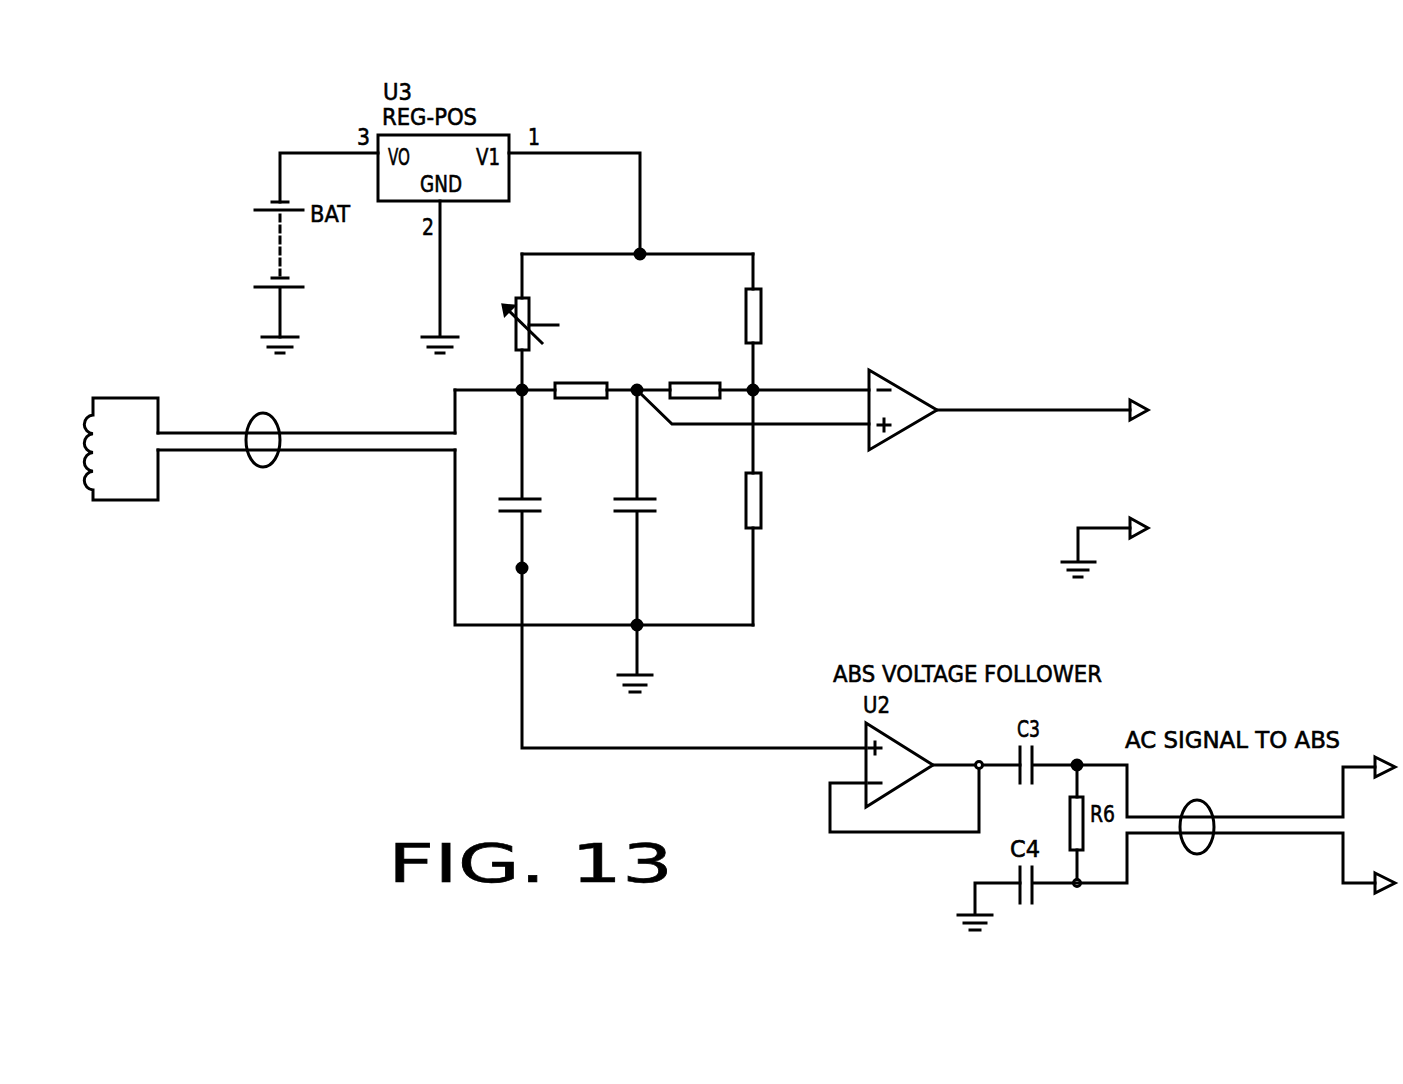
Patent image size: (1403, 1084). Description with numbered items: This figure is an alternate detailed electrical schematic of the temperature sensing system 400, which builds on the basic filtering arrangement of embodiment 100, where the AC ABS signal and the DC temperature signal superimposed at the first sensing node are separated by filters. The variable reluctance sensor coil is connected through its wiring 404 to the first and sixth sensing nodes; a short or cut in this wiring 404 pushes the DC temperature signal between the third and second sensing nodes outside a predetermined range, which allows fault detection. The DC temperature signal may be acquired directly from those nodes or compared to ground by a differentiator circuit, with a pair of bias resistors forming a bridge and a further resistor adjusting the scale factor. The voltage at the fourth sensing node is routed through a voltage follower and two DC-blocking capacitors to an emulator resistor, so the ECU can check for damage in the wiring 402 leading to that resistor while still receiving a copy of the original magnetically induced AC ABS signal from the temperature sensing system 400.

The embodiment 100 is at (752, 215).
The temperature sensing system 400 is at (335, 633).
The wiring 402 is at (1197, 853).
The wiring 404 is at (263, 467).